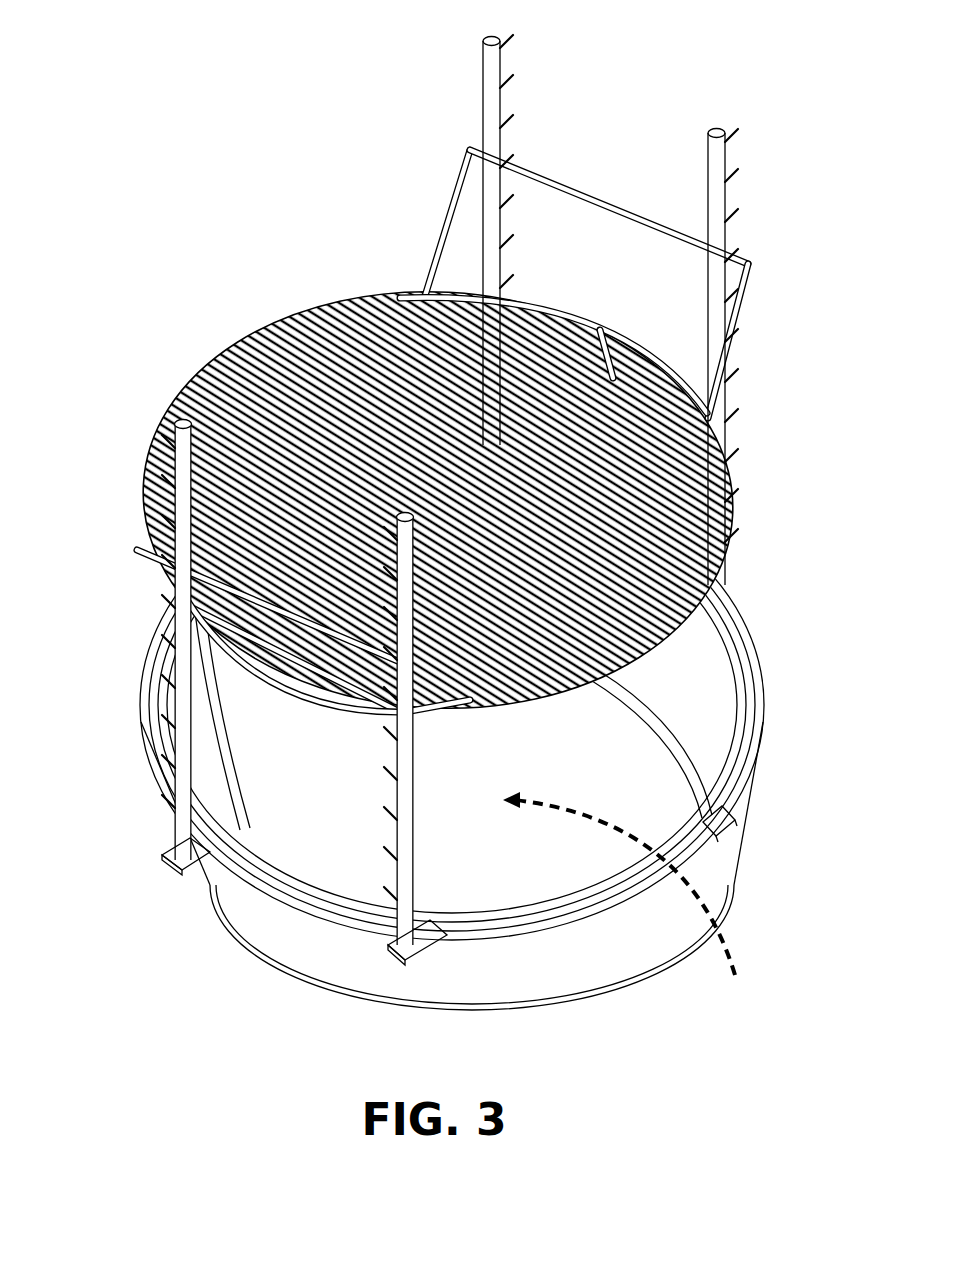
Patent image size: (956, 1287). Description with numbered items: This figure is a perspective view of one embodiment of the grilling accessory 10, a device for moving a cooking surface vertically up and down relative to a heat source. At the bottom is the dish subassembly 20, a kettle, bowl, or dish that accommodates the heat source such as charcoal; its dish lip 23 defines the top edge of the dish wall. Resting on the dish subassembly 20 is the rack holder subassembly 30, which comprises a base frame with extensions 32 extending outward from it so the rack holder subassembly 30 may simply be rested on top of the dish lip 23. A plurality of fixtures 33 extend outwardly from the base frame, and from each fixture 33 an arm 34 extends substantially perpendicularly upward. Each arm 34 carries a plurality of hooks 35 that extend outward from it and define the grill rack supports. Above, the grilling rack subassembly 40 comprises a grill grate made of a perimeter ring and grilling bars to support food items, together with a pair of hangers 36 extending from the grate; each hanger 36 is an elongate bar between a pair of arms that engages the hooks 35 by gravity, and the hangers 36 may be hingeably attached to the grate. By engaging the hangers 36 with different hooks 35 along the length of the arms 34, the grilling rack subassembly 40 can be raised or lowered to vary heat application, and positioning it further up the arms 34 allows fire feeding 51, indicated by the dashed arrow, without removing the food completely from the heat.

The grilling accessory 10 is at (258, 148).
The dish subassembly 20 is at (455, 774).
The dish lip 23 is at (553, 933).
The rack holder subassembly 30 is at (283, 868).
The extensions 32 is at (733, 830).
The fixtures 33 is at (170, 872).
The arms 34 is at (482, 92).
The hooks 35 is at (514, 142).
The hangers 36 is at (440, 198).
The grilling rack subassembly 40 is at (330, 292).
The fire feeding 51 is at (629, 902).